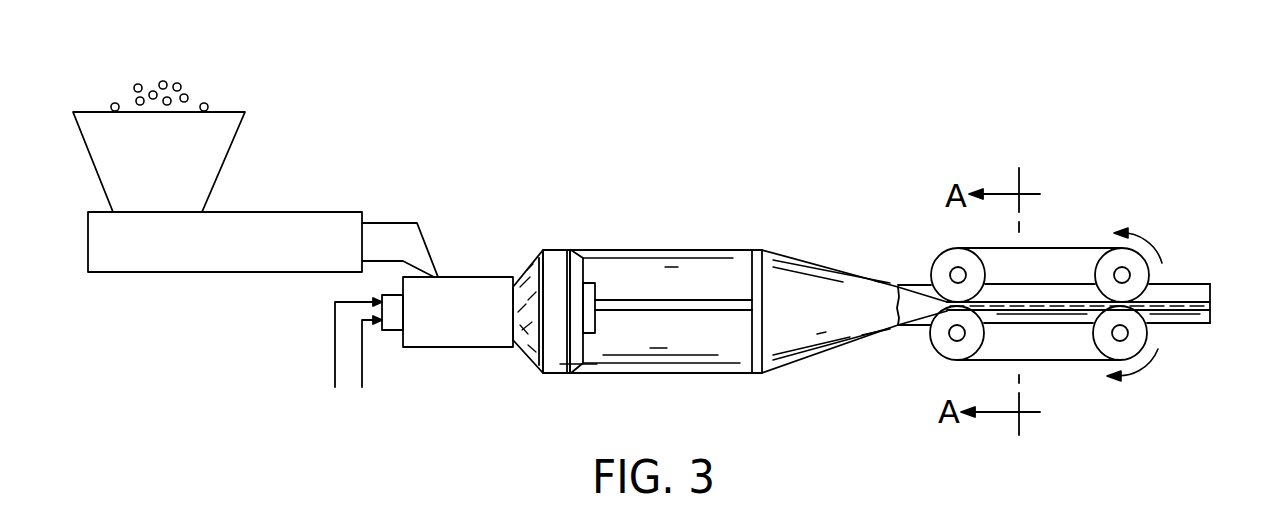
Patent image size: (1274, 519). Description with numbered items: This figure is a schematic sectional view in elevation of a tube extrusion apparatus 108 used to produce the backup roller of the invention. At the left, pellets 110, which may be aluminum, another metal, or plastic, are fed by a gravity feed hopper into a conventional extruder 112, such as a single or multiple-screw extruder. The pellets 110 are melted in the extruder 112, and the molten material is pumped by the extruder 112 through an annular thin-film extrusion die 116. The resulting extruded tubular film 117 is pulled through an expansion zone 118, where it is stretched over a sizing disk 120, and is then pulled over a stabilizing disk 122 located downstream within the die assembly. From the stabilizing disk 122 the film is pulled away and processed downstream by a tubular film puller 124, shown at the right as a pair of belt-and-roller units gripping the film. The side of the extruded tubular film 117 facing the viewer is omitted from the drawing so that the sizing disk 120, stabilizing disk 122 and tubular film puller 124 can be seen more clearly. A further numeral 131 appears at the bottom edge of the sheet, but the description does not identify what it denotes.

The extrusion die 108 is at (742, 214).
The pellets 110 is at (187, 93).
The extruder 112 is at (320, 217).
The annular thin-film extrusion die 116 is at (468, 277).
The extruded tubular film 117 is at (531, 270).
The expansion zone 118 is at (525, 353).
The sizing disk 120 is at (585, 273).
The stabilizing disk 122 is at (767, 343).
The tubular film puller 124 is at (1071, 235).
The reference numeral 131 is at (272, 512).